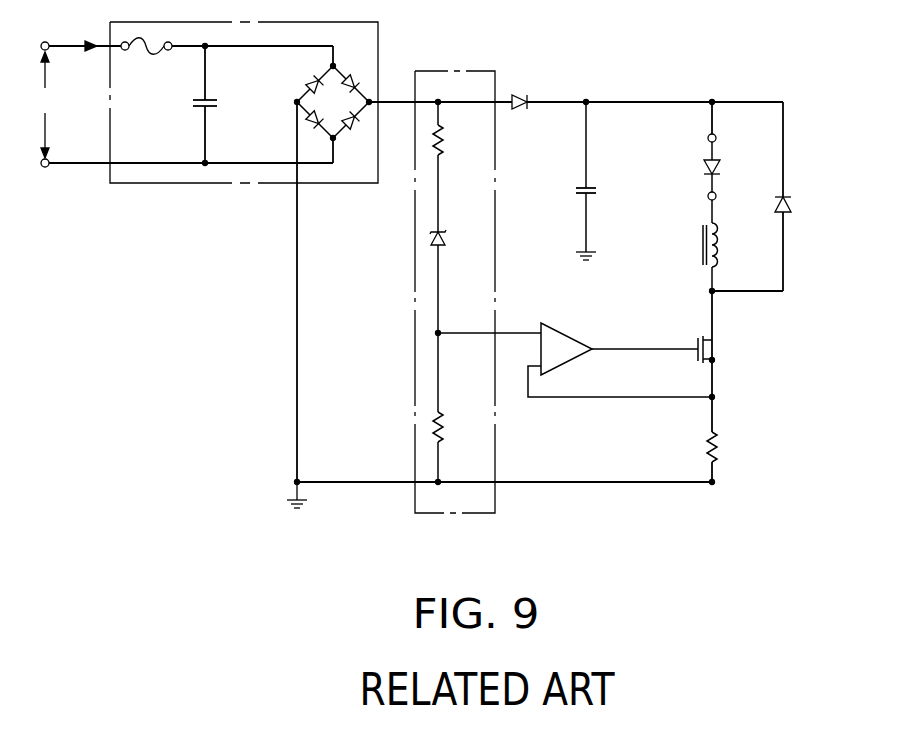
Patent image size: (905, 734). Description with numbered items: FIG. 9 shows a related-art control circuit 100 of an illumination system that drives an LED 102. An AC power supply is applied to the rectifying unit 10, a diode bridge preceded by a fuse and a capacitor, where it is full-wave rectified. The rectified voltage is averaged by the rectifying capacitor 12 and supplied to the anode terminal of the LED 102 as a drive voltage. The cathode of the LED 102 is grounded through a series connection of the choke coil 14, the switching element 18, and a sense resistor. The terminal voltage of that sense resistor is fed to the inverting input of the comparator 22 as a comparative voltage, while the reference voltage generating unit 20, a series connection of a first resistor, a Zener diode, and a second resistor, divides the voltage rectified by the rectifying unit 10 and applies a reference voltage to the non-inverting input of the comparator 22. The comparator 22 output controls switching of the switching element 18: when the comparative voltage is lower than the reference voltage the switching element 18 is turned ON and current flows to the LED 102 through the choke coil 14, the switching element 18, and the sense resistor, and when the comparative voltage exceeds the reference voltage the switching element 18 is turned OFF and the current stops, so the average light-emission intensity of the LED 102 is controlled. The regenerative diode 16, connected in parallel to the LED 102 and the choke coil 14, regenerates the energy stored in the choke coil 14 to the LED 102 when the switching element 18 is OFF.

The control circuit 100 is at (437, 556).
The rectifying unit 10 is at (173, 184).
The reference voltage generating unit 20 is at (488, 71).
The rectifying capacitor 12 is at (590, 180).
The LED 102 is at (722, 168).
The choke coil 14 is at (724, 247).
The regenerative diode 16 is at (800, 205).
The switching element 18 is at (727, 352).
The comparator 22 is at (565, 330).